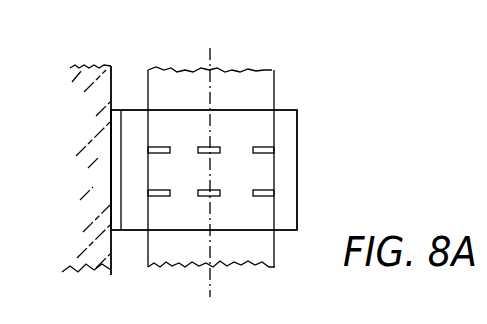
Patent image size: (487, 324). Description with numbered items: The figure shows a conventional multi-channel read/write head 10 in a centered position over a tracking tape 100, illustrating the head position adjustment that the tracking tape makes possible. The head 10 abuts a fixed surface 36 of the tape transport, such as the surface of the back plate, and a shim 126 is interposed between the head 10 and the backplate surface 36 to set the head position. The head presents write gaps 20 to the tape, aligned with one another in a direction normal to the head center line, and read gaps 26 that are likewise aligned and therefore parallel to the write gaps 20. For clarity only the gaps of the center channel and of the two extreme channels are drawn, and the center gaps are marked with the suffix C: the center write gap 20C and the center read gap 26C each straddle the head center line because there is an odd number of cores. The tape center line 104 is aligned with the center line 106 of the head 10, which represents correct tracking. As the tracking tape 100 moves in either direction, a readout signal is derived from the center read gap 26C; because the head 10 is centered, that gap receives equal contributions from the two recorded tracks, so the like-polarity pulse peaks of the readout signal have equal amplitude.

The fixed surface 36 is at (112, 67).
The shim 126 is at (118, 136).
The head 10 is at (298, 171).
The tracking tape 100 is at (258, 251).
The tape center line 104 is at (212, 280).
The write gaps 20 is at (151, 146).
The center write gap 20C is at (239, 153).
The read gaps 26 is at (156, 197).
The center read gap 26C is at (221, 194).
The head center line 106 is at (208, 209).